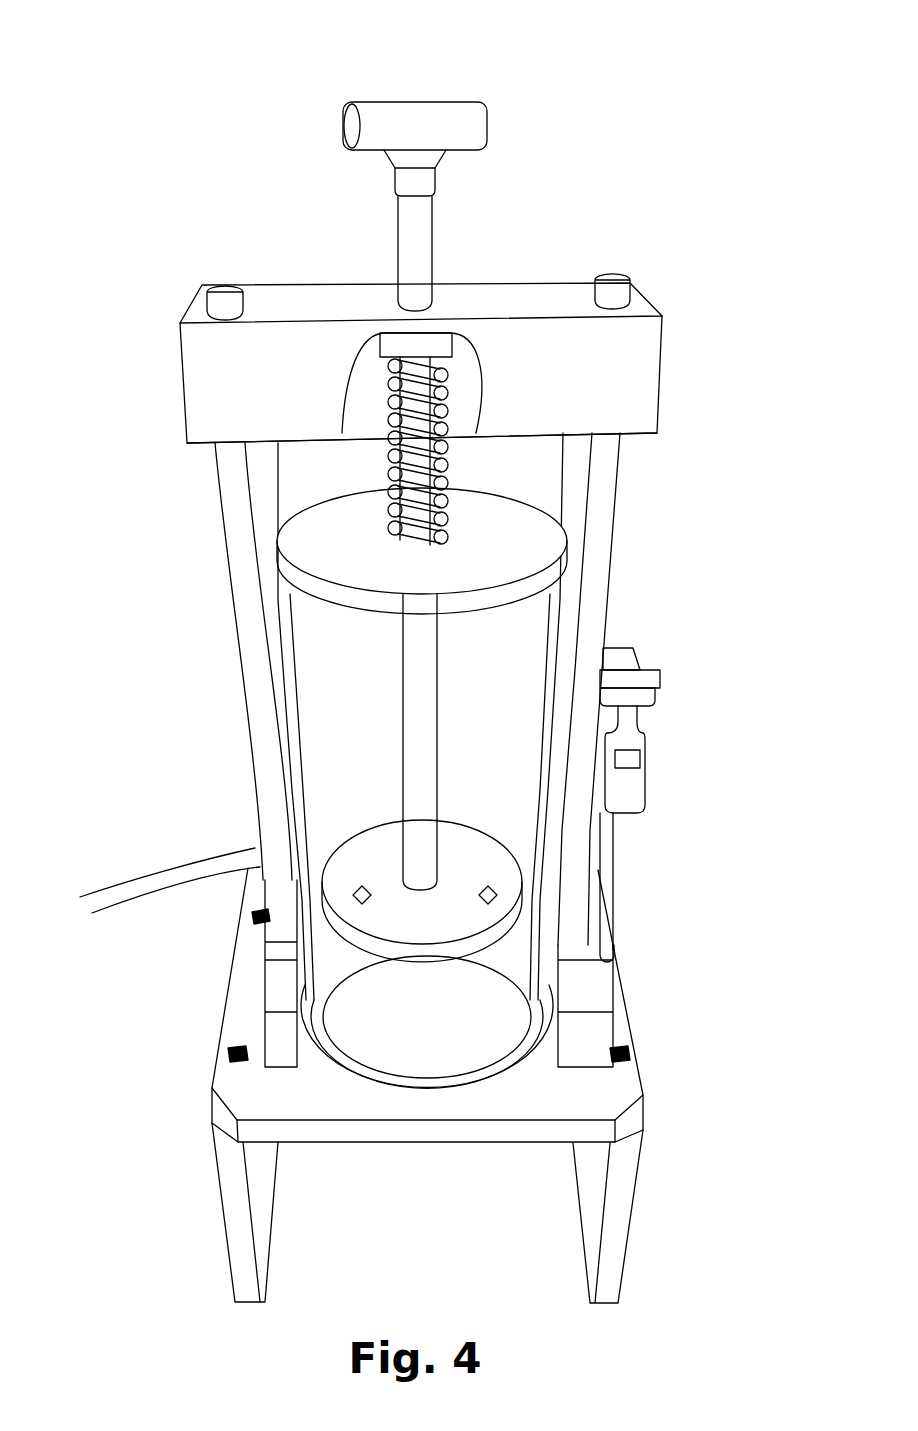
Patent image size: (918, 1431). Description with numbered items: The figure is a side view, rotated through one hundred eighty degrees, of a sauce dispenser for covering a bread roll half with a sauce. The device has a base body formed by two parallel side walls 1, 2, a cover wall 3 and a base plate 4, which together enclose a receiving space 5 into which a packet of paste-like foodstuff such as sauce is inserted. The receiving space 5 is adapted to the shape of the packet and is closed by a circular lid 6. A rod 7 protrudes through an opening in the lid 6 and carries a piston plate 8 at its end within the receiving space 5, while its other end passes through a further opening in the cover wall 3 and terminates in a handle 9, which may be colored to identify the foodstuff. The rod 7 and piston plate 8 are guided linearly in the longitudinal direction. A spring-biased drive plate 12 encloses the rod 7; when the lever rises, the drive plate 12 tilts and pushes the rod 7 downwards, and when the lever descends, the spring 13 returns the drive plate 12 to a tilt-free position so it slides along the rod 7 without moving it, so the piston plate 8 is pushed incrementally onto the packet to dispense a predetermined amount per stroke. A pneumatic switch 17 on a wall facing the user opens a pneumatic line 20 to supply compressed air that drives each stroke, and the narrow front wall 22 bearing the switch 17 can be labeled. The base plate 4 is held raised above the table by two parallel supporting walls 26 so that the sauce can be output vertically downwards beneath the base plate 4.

The side wall 1 is at (262, 635).
The side wall 2 is at (598, 495).
The cover wall 3 is at (277, 305).
The base plate 4 is at (245, 1025).
The receiving space 5 is at (538, 627).
The lid 6 is at (312, 540).
The rod 7 is at (430, 780).
The piston plate 8 is at (470, 910).
The handle 9 is at (456, 128).
The drive plate 12 is at (447, 346).
The spring 13 is at (375, 462).
The pneumatic switch 17 is at (632, 793).
The pneumatic line 20 is at (195, 868).
The narrow front wall 22 is at (228, 390).
The supporting walls 26 is at (238, 1170).